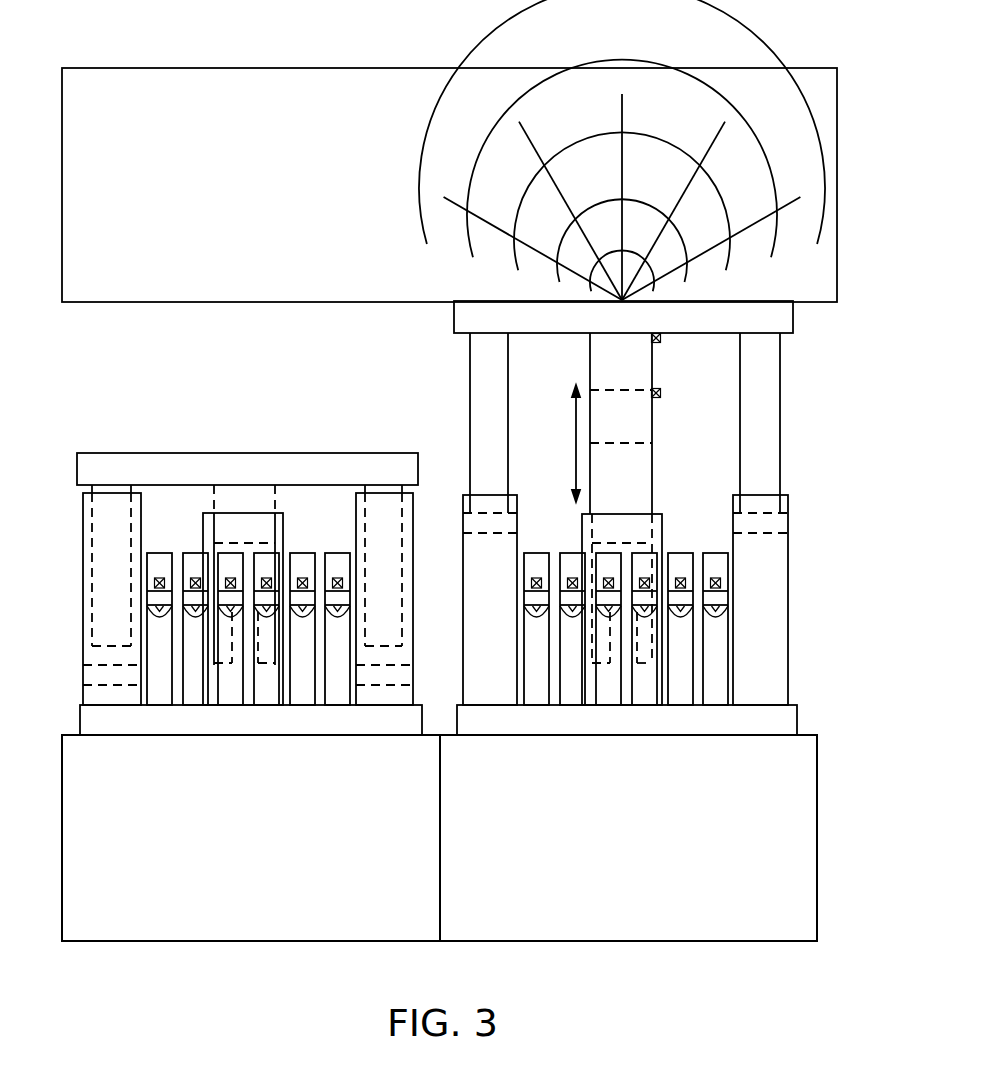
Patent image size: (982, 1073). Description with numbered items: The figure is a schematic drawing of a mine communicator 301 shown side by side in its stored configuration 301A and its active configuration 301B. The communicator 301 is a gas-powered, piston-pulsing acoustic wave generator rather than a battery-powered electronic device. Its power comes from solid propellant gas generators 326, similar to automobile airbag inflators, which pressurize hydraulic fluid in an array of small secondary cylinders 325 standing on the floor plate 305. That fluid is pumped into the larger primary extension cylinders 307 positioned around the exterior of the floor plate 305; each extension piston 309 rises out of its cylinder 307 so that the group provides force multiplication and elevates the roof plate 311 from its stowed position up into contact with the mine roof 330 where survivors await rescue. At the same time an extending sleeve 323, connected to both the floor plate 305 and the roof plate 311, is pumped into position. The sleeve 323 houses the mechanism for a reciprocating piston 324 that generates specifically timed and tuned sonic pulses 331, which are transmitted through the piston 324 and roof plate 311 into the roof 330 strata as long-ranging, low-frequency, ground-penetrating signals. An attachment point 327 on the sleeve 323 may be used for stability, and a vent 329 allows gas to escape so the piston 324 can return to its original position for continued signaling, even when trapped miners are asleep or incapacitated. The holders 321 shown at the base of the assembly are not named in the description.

The communicator 301 is at (430, 675).
The stored configuration 301A is at (249, 942).
The active configuration 301B is at (637, 942).
The floor plate 305 is at (80, 705).
The extension cylinders 307 is at (463, 491).
The extension piston 309 is at (470, 372).
The roof plate 311 is at (454, 316).
The holder 321 is at (582, 533).
The extending sleeve 323 is at (652, 480).
The reciprocating piston 324 is at (652, 430).
The secondary cylinders 325 is at (725, 636).
The solid propellant gas generators 326 is at (722, 585).
The attachment point 327 is at (661, 338).
The vent 329 is at (661, 393).
The roof 330 is at (445, 68).
The sonic pulses 331 is at (611, 68).